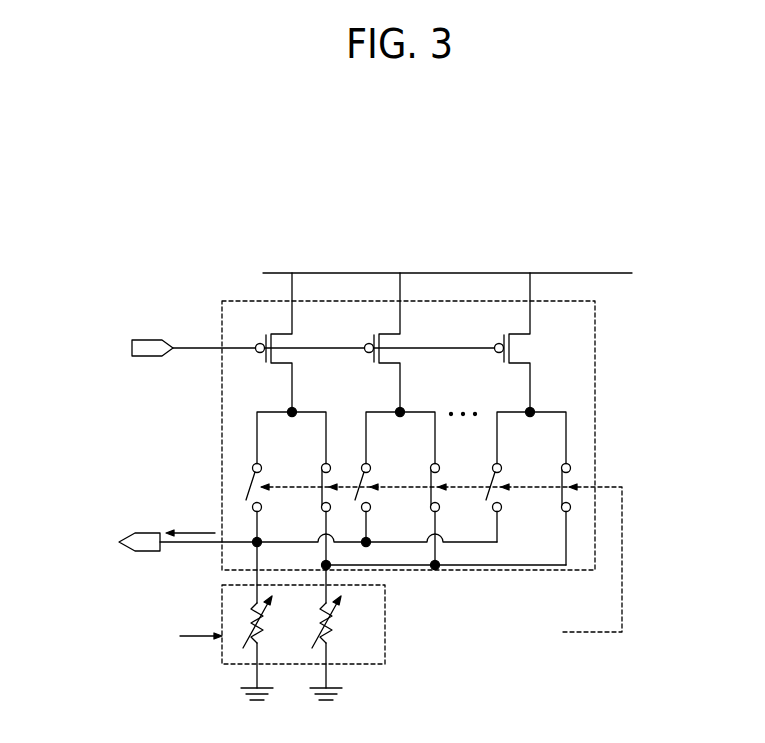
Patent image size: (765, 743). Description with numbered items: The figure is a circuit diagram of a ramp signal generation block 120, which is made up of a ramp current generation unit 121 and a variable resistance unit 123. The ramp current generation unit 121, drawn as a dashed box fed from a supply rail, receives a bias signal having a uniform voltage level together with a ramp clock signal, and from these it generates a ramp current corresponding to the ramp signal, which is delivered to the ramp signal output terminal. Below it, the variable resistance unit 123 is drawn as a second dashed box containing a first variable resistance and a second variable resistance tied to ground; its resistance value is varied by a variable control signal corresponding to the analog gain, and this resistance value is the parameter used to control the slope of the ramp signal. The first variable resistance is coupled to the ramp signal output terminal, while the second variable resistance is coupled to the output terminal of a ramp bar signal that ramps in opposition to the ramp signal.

The ramp signal generation block 120 is at (69, 226).
The ramp current generation unit 121 is at (595, 302).
The variable resistance unit 123 is at (385, 590).